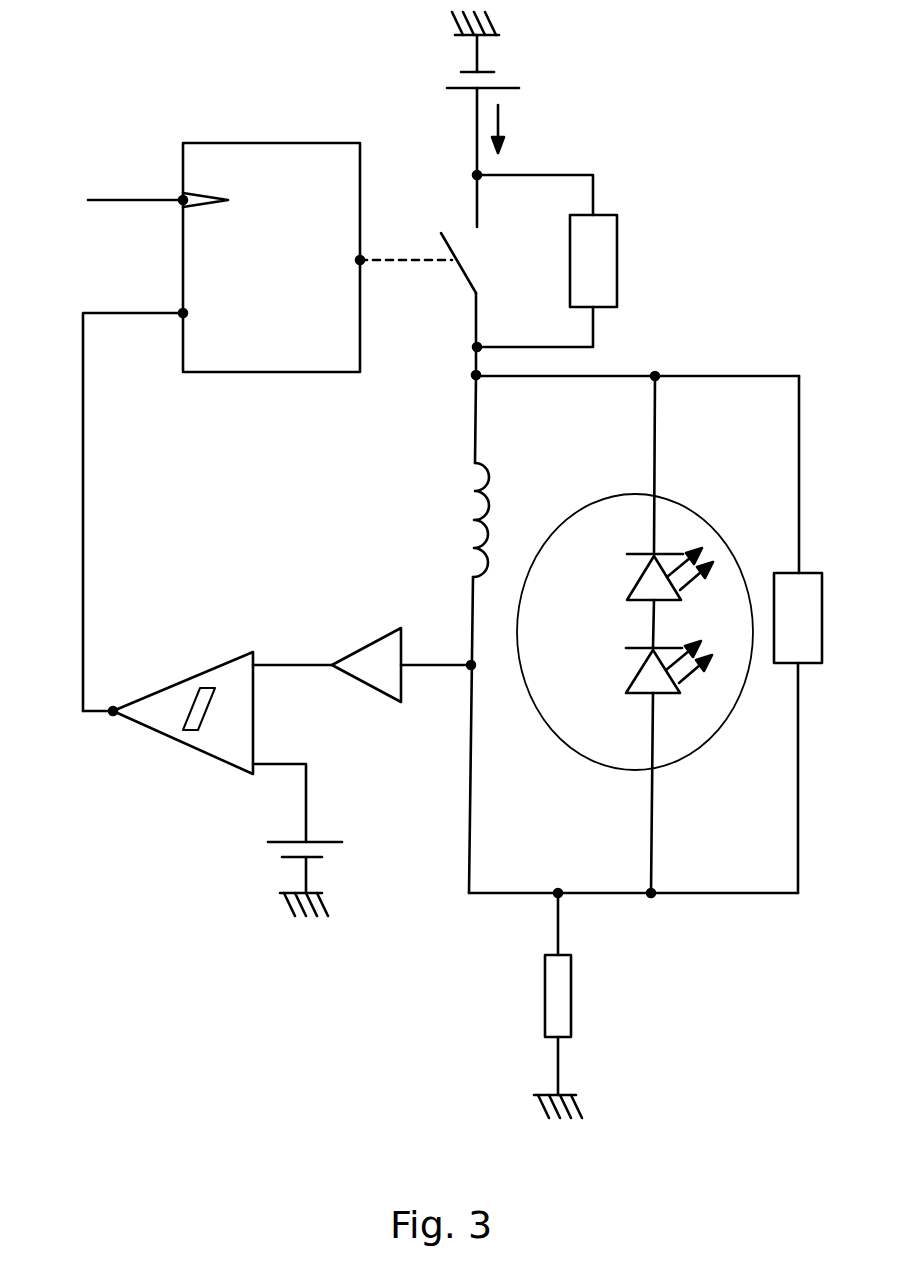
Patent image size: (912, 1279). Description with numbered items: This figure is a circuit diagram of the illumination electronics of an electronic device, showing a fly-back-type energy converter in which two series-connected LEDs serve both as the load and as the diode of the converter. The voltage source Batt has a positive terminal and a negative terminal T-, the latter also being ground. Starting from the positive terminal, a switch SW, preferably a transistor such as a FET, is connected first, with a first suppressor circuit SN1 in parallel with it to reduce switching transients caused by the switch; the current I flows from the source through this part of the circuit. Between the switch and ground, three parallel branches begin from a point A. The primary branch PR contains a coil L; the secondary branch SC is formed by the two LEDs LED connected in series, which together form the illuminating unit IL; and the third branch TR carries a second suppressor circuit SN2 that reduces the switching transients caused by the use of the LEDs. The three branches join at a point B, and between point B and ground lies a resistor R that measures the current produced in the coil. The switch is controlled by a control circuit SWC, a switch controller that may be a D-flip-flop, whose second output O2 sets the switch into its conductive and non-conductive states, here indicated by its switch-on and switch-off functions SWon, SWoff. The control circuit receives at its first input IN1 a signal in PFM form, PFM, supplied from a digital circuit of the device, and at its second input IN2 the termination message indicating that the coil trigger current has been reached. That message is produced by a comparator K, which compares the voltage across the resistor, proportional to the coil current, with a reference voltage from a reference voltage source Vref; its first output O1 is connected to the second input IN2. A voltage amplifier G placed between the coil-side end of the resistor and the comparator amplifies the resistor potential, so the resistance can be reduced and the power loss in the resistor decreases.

The control circuit SWC is at (262, 143).
The switch-on output SWon is at (253, 191).
The switch-off output SWoff is at (233, 298).
The pulse frequency modulation signal PFM is at (99, 201).
The first input IN1 is at (181, 203).
The second input IN2 is at (181, 316).
The second output O2 is at (362, 263).
The voltage source Batt is at (507, 50).
The current I is at (506, 127).
The switch SW is at (442, 287).
The first suppressor circuit SN1 is at (583, 263).
The point A is at (618, 379).
The primary branch PR is at (497, 634).
The coil L is at (463, 520).
The secondary branch SC is at (677, 634).
The element LED is at (634, 620).
The illuminating unit IL is at (729, 543).
The third branch TR is at (824, 634).
The second suppressor circuit SN2 is at (835, 618).
The point B is at (633, 873).
The resistor R is at (537, 994).
The negative terminal T- is at (581, 1092).
The voltage amplifier G is at (364, 665).
The comparator K is at (183, 708).
The first output O1 is at (112, 713).
The reference voltage source Vref is at (328, 840).